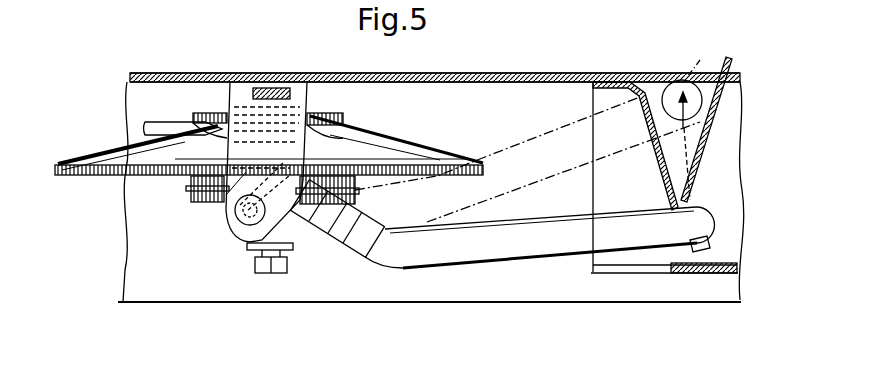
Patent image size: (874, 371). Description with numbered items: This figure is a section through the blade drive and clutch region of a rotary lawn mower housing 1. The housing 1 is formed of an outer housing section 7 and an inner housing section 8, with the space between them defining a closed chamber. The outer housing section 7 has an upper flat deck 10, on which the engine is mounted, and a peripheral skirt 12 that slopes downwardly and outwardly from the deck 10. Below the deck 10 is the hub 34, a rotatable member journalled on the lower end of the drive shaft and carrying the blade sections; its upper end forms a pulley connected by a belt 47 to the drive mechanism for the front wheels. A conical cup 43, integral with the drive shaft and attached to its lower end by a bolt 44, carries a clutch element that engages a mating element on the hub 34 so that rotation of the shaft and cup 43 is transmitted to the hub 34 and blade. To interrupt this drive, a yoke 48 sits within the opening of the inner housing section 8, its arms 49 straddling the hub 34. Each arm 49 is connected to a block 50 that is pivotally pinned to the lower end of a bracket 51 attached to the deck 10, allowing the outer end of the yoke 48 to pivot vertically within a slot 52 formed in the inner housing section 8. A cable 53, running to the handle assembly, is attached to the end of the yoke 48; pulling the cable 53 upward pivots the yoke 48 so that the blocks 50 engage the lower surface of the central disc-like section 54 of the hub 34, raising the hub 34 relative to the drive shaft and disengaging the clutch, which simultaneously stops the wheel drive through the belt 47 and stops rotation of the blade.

The housing 1 is at (563, 73).
The outer housing section 7 is at (190, 71).
The inner housing section 8 is at (721, 259).
The upper flat deck 10 is at (490, 83).
The peripheral skirt 12 is at (649, 293).
The hub 34 is at (406, 143).
The conical cup 43 is at (213, 233).
The bolt 44 is at (277, 275).
The belt 47 is at (181, 121).
The yoke 48 is at (532, 246).
The arms 49 is at (400, 254).
The block 50 is at (247, 250).
The bracket 51 is at (192, 183).
The slot 52 is at (634, 101).
The cable 53 is at (745, 138).
The central disc-like section 54 is at (462, 158).